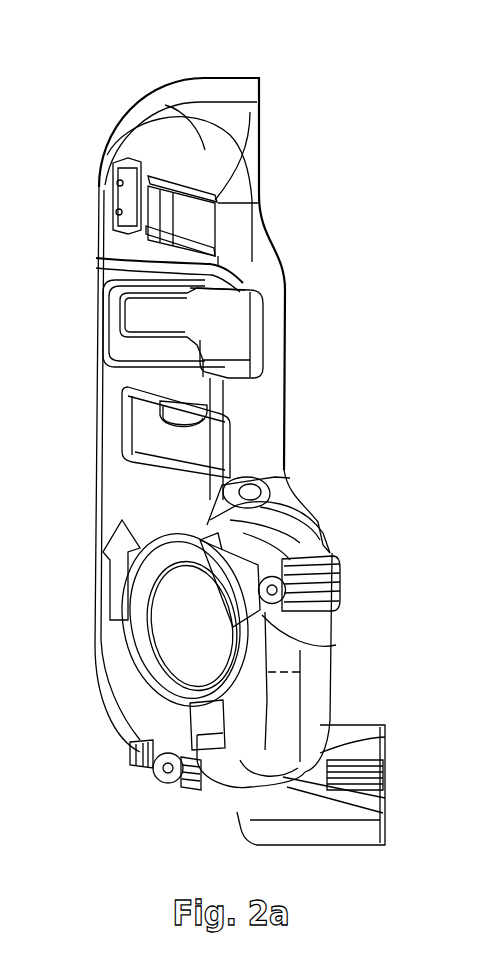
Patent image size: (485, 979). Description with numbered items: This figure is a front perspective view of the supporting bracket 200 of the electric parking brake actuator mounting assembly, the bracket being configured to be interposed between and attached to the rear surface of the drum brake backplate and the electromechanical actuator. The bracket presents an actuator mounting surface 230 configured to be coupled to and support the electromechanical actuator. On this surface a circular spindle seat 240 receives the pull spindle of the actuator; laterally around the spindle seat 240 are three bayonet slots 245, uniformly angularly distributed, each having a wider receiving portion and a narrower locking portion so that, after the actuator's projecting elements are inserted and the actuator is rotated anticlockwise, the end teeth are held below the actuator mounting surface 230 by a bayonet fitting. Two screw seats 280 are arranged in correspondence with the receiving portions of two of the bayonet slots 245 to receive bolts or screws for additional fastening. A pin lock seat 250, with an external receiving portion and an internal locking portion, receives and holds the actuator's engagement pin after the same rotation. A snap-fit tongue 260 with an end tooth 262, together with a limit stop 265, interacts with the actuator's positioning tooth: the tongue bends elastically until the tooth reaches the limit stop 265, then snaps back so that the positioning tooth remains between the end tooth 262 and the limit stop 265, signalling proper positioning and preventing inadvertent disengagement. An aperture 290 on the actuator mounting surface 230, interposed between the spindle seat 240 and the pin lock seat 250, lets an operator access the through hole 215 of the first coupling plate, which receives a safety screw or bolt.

The supporting bracket 200 is at (268, 62).
The through hole 215 is at (200, 414).
The actuator mounting surface 230 is at (127, 497).
The spindle seat 240 is at (175, 645).
The bayonet slots 245 is at (127, 550).
The pin lock seat 250 is at (138, 312).
The snap-fit tongue 260 is at (195, 221).
The end tooth 262 is at (150, 188).
The limit stop 265 is at (114, 165).
The screw seats 280 is at (168, 784).
The aperture 290 is at (145, 432).